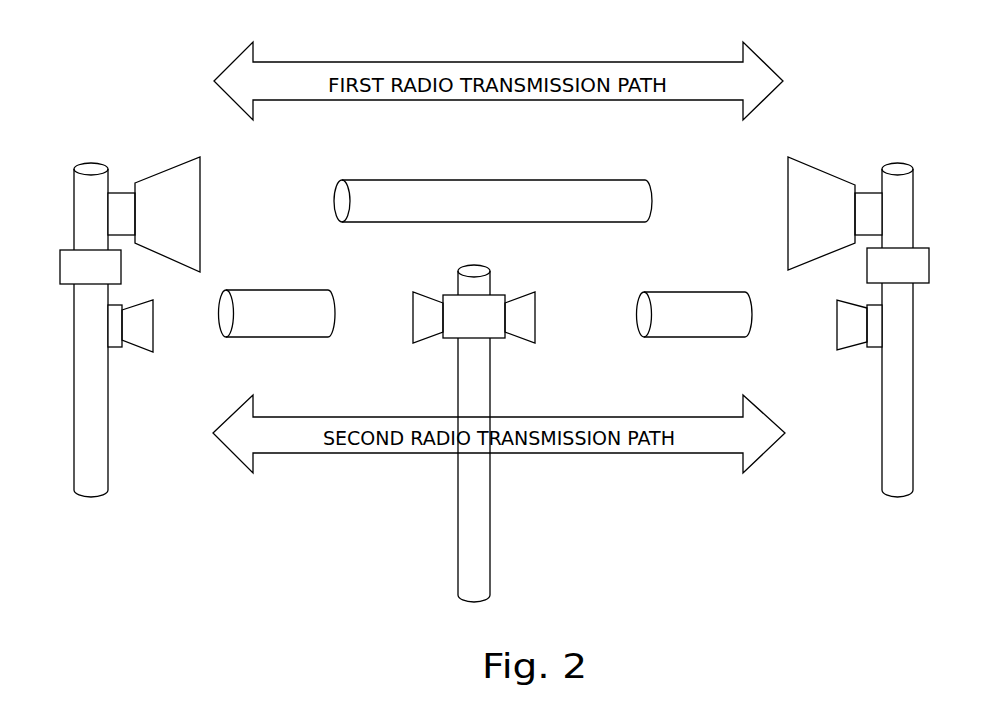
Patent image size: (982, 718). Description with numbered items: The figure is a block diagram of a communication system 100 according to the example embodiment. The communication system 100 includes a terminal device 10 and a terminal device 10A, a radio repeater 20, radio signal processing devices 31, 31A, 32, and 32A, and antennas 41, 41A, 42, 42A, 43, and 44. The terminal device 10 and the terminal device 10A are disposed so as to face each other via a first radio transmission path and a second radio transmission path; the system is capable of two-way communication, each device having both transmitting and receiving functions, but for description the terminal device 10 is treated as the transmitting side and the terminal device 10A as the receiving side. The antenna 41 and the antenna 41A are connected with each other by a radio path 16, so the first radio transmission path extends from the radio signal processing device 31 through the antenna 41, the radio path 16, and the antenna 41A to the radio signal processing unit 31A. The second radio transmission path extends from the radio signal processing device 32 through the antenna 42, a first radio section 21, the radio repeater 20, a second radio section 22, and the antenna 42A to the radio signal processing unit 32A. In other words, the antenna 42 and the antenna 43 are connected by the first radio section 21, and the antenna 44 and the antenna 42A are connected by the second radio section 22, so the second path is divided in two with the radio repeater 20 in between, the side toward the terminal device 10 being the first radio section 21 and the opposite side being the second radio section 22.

The terminal device 10 is at (61, 250).
The terminal device 10A is at (917, 248).
The radio path 16 is at (622, 180).
The radio repeater 20 is at (449, 292).
The first radio section 21 is at (270, 290).
The second radio section 22 is at (697, 290).
The radio signal processing device 31 is at (113, 192).
The radio signal processing unit 31A is at (853, 192).
The radio signal processing device 32 is at (113, 305).
The radio signal processing unit 32A is at (866, 305).
The antenna 41 is at (202, 178).
The antenna 41A is at (787, 180).
The antenna 42 is at (154, 313).
The antenna 42A is at (836, 312).
The antenna 43 is at (419, 292).
The antenna 44 is at (528, 292).
The communication system 100 is at (882, 562).